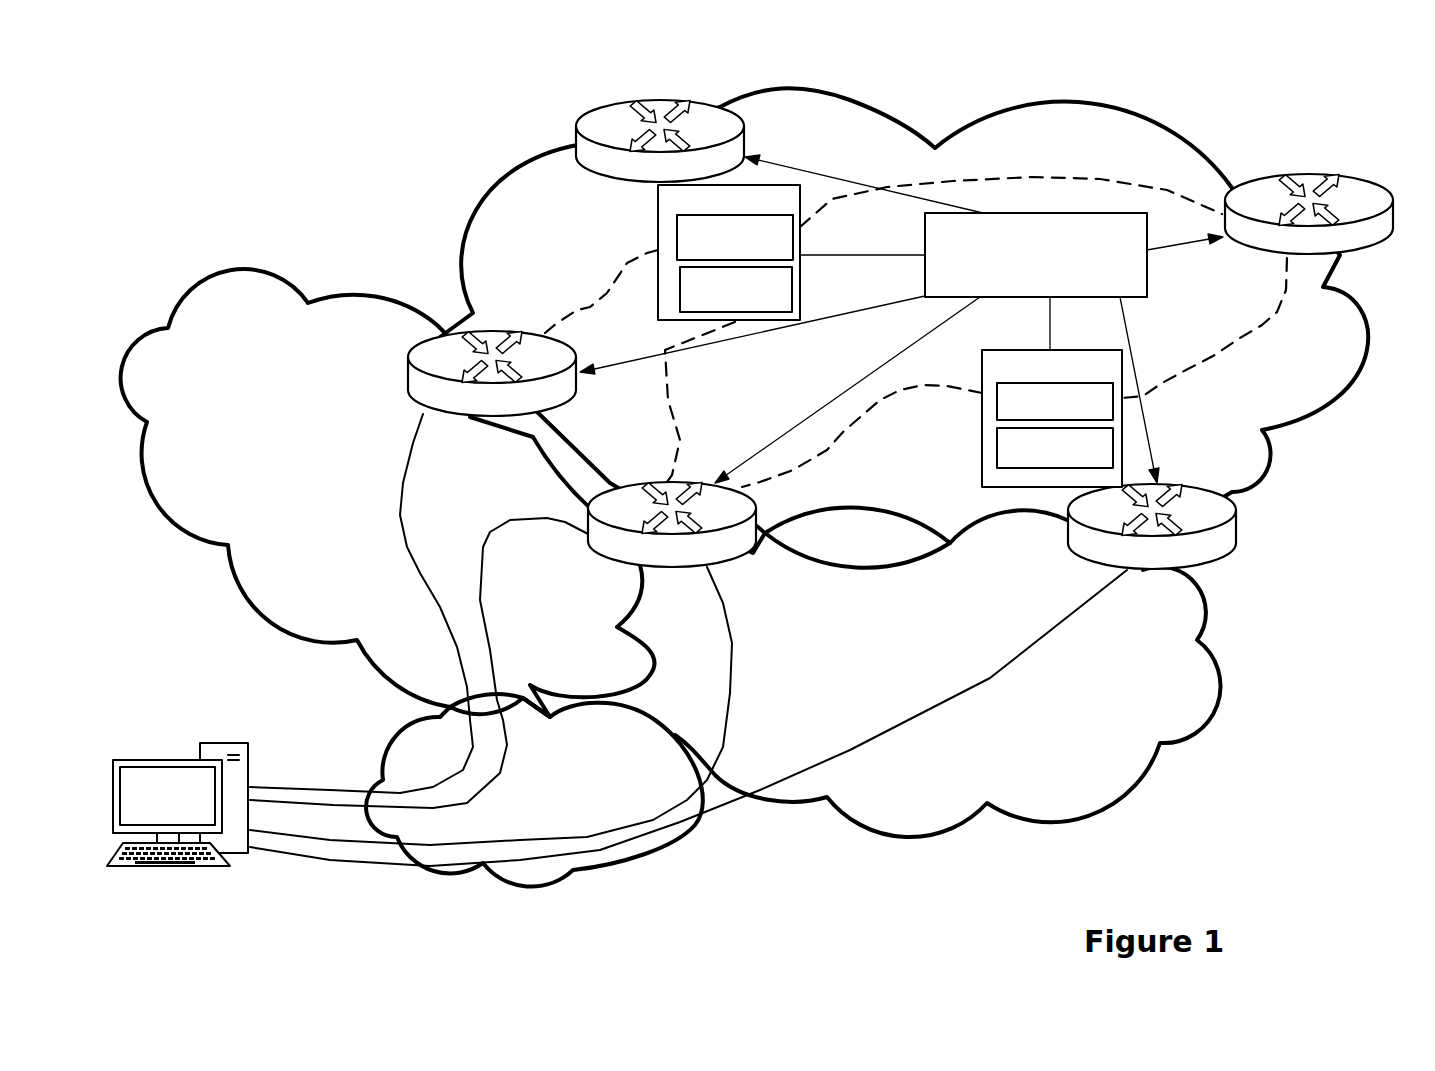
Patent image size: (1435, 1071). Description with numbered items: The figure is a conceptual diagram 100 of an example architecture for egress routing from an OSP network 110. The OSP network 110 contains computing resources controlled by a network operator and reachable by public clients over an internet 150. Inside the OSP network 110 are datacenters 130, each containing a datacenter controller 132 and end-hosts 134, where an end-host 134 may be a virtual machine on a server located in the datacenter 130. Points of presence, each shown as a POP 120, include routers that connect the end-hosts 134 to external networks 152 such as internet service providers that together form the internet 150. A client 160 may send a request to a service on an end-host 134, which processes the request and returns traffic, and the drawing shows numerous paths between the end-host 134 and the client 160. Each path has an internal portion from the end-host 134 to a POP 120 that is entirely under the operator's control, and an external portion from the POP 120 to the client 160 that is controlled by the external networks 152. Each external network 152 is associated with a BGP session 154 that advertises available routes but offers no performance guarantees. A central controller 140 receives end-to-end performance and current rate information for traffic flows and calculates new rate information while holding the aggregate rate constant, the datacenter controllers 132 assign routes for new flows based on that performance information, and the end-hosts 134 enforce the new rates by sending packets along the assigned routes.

The conceptual diagram 100 is at (153, 68).
The OSP network 110 is at (904, 304).
The POP 120 is at (877, 317).
The datacenter 130 is at (843, 336).
The datacenter controller 132 is at (839, 314).
The end-host 134 is at (840, 363).
The central controller 140 is at (1021, 279).
The internet 150 is at (645, 551).
The external network 152 is at (671, 552).
The BGP session 154 is at (688, 640).
The client 160 is at (177, 769).